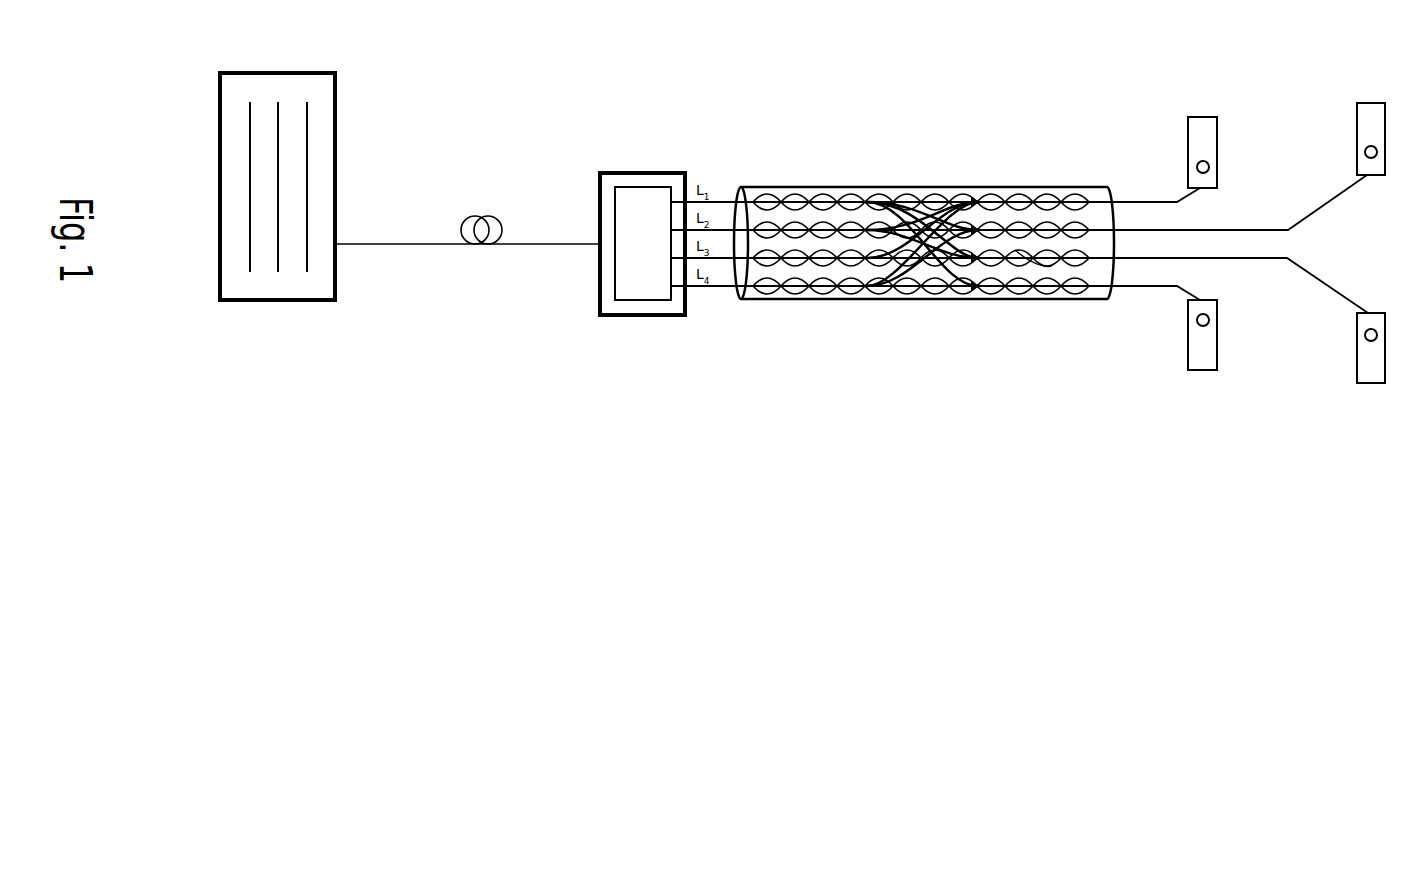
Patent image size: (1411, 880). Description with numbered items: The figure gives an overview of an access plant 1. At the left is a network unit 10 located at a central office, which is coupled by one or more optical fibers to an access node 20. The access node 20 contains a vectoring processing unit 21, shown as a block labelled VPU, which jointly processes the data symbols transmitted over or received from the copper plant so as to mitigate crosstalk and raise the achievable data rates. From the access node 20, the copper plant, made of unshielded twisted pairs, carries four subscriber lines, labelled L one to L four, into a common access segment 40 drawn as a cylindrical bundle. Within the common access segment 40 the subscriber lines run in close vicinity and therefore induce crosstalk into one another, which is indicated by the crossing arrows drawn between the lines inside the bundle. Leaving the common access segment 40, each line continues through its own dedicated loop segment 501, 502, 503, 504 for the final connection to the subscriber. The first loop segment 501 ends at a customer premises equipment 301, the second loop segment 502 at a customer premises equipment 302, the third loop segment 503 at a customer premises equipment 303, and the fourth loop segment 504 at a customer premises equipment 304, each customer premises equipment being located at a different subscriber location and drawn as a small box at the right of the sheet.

The access plant 1 is at (1167, 566).
The network unit 10 is at (220, 75).
The access node 20 is at (619, 249).
The vectoring processing unit 21 is at (644, 300).
The common access segment 40 is at (921, 300).
The dedicated loop segment 501 is at (1143, 202).
The dedicated loop segment 502 is at (1255, 230).
The dedicated loop segment 503 is at (1255, 258).
The dedicated loop segment 504 is at (1143, 286).
The customer premises equipment 301 is at (1200, 117).
The customer premises equipment 302 is at (1368, 103).
The customer premises equipment 303 is at (1370, 383).
The customer premises equipment 304 is at (1200, 370).